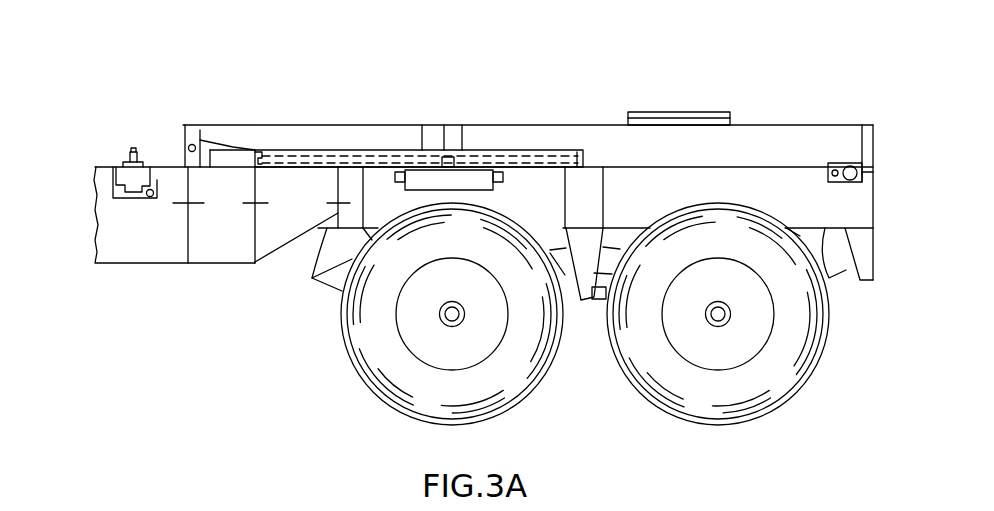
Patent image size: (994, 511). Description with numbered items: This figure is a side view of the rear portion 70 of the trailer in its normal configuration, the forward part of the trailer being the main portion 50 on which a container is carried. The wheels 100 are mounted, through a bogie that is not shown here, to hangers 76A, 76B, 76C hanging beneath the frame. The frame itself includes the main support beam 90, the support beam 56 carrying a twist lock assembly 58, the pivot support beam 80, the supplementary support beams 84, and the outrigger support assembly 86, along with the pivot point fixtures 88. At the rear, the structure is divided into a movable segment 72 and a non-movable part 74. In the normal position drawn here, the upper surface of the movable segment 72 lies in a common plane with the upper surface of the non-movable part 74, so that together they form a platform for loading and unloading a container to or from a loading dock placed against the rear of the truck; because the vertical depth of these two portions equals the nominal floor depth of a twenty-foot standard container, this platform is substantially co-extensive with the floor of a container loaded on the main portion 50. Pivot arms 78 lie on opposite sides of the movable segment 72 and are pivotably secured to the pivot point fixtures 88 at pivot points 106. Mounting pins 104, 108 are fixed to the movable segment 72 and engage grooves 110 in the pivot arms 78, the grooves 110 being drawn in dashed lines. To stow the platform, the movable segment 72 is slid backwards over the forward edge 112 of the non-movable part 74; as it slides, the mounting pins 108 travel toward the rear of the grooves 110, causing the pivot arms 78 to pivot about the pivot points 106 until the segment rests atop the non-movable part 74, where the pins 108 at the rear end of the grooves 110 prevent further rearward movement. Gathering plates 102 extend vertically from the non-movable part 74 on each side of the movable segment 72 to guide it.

The main portion 50 is at (118, 86).
The rear portion 70 is at (831, 80).
The movable segment 72 is at (361, 125).
The non-movable part 74 is at (830, 156).
The hanger 76A is at (312, 279).
The hanger 76B is at (580, 303).
The hanger 76C is at (835, 268).
The pivot arm 78 is at (578, 157).
The pivot support beam 80 is at (179, 205).
The supplementary support beam 84 is at (255, 215).
The outrigger support assembly 86 is at (500, 186).
The pivot point fixture 88 is at (187, 146).
The main support beam 90 is at (142, 245).
The wheels 100 is at (531, 378).
The gathering plate 102 is at (664, 110).
The mounting pin 104 is at (453, 158).
The pivot point 106 is at (196, 140).
The mounting pin 108 is at (262, 150).
The groove 110 is at (378, 152).
The forward edge 112 is at (431, 150).
The support beam 56 is at (114, 198).
The twist lock assembly 58 is at (113, 178).